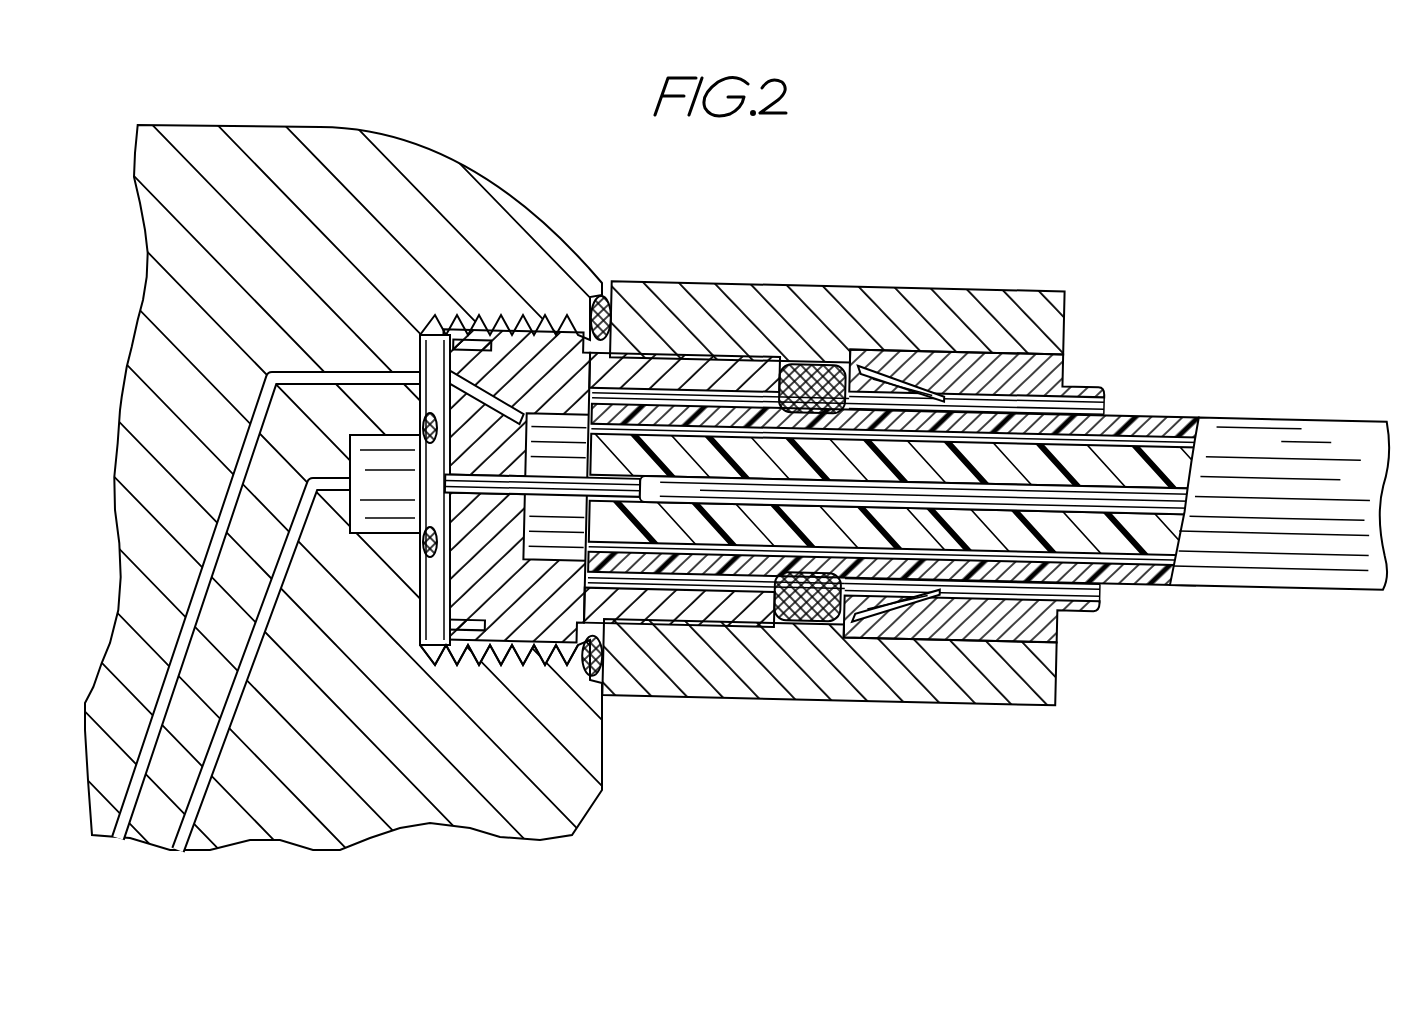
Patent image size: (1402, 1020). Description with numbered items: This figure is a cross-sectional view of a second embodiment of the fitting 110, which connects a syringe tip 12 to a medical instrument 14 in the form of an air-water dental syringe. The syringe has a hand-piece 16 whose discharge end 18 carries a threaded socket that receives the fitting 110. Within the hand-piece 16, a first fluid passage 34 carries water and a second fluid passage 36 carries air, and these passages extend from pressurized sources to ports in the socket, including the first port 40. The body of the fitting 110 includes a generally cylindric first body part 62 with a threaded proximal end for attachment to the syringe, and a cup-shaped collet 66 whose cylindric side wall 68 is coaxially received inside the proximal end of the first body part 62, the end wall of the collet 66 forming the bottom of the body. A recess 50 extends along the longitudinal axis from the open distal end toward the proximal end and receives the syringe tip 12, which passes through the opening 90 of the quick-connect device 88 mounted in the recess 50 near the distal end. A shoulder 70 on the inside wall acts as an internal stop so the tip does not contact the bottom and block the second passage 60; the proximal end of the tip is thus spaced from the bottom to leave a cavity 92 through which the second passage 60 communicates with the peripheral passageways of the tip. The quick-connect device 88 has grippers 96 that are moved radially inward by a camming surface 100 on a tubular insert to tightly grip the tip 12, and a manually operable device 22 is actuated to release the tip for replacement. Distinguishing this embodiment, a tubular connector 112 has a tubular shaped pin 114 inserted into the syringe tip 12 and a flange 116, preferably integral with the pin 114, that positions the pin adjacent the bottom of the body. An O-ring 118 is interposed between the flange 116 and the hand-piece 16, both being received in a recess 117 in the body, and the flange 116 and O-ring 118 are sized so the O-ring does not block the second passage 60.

The syringe tip 12 is at (1250, 435).
The medical instrument 14 is at (132, 517).
The hand-piece 16 is at (480, 210).
The discharge end 18 is at (575, 785).
The manually operable device 22 is at (1093, 600).
The first fluid passage 34 is at (290, 825).
The second fluid passage 36 is at (330, 375).
The first port 40 is at (355, 520).
The recess 50 is at (775, 390).
The second passage 60 is at (423, 320).
The first body part 62 is at (880, 307).
The collet 66 is at (700, 440).
The side wall 68 is at (745, 560).
The shoulder 70 is at (640, 440).
The quick-connect device 88 is at (1043, 370).
The opening 90 is at (1002, 350).
The cavity 92 is at (605, 545).
The grippers 96 is at (985, 300).
The camming surface 100 is at (912, 600).
The fitting 110 is at (878, 505).
The tubular connector 112 is at (665, 540).
The tubular shaped pin 114 is at (710, 372).
The flange 116 is at (477, 587).
The recess 117 is at (385, 400).
The O-ring 118 is at (430, 640).